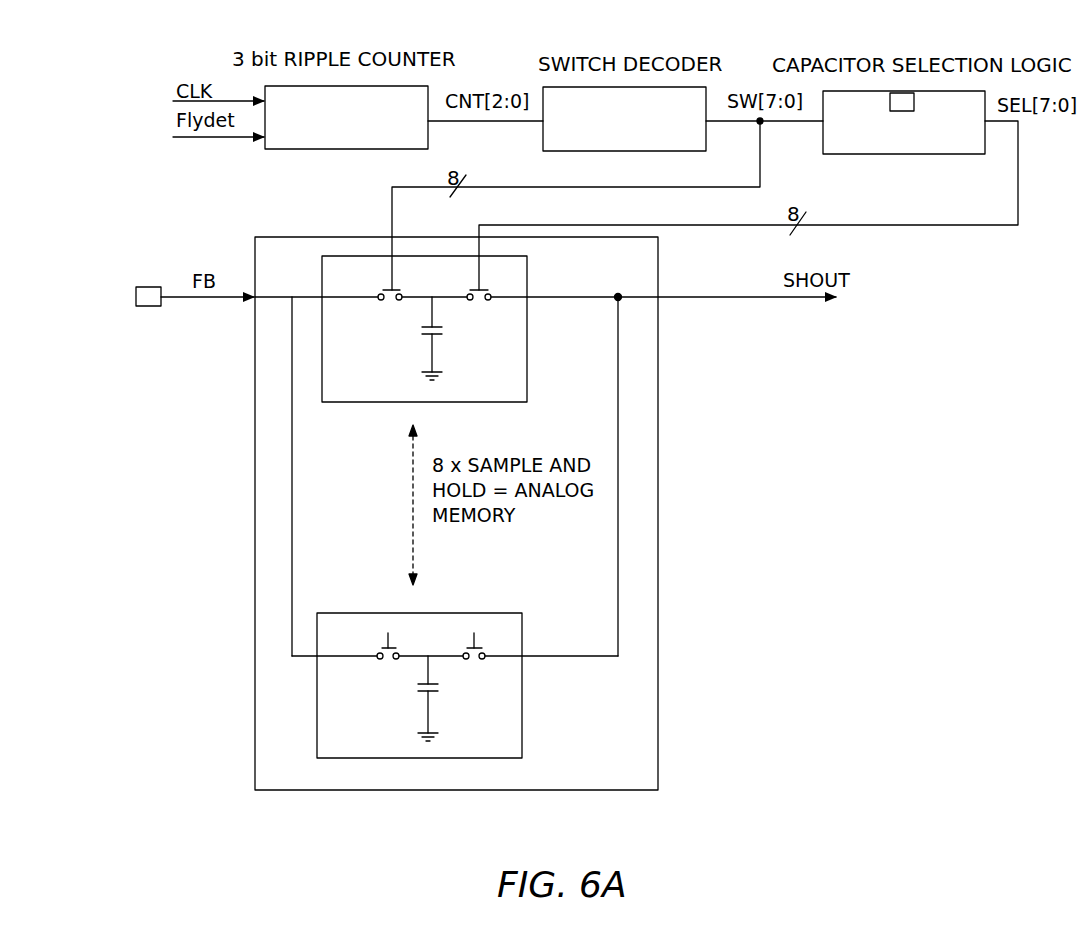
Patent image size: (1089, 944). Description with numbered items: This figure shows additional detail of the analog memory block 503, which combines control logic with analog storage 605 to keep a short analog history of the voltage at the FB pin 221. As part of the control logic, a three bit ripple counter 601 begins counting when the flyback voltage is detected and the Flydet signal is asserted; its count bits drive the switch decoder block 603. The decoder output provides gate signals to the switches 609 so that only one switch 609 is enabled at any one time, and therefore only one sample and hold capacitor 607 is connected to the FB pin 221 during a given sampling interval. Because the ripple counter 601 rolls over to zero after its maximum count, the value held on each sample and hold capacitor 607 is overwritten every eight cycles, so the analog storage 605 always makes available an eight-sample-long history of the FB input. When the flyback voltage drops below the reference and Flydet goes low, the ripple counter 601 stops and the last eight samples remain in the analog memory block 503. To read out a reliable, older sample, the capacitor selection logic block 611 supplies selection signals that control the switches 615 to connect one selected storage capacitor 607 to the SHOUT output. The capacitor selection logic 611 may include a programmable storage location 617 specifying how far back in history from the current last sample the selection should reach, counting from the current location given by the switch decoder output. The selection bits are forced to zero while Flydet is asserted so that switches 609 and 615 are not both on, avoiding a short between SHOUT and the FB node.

The FB pin 221 is at (165, 307).
The analog memory block 503 is at (853, 565).
The 3 bit ripple counter 601 is at (305, 150).
The switch decoder block 603 is at (707, 125).
The analog storage 605 is at (658, 417).
The sample and hold capacitor 607 is at (457, 369).
The switch 609 is at (392, 305).
The capacitor selection logic block 611 is at (879, 155).
The switch 615 is at (491, 283).
The programmable storage location 617 is at (902, 111).